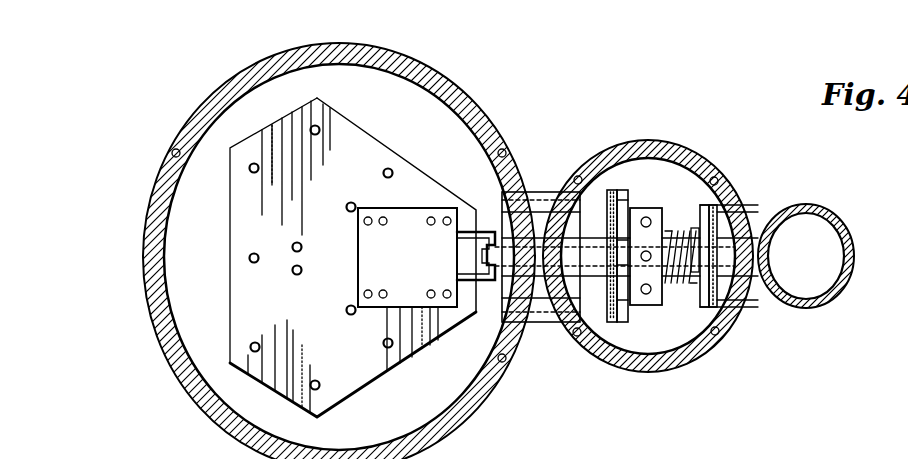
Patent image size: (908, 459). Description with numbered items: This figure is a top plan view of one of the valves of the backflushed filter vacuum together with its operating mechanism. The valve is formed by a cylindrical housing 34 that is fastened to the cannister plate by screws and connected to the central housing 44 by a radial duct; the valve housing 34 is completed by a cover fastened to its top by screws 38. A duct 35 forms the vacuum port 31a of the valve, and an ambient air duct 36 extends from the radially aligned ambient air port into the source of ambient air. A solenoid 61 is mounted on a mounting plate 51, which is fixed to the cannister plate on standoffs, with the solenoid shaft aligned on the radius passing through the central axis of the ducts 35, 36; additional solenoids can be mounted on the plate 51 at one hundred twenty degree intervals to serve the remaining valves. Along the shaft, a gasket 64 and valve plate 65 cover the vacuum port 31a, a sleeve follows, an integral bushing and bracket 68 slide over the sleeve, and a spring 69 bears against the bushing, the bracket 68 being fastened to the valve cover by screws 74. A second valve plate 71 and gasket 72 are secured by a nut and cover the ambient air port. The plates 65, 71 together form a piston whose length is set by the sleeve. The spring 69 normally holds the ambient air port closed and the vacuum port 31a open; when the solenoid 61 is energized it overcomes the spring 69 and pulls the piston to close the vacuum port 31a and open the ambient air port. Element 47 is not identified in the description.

The central housing 44 is at (152, 255).
The fastener 47 is at (170, 151).
The mounting plate 51 is at (237, 272).
The solenoid 61 is at (378, 272).
The duct 35 is at (556, 195).
The vacuum port 31a is at (585, 220).
The cylindrical housing 34 is at (687, 147).
The screws 38 is at (714, 176).
The ambient air duct 36 is at (767, 203).
The gasket 64 is at (609, 323).
The valve plate 65 is at (622, 323).
The bracket 68 is at (648, 305).
The screws 74 is at (646, 215).
The spring 69 is at (686, 283).
The second valve plate 71 is at (704, 308).
The gasket 72 is at (716, 308).